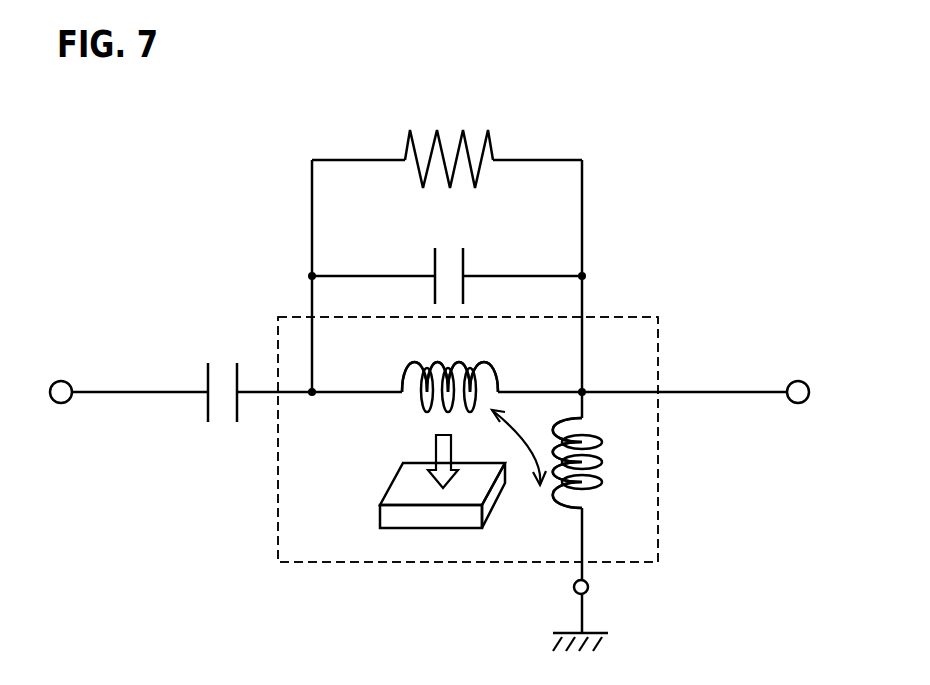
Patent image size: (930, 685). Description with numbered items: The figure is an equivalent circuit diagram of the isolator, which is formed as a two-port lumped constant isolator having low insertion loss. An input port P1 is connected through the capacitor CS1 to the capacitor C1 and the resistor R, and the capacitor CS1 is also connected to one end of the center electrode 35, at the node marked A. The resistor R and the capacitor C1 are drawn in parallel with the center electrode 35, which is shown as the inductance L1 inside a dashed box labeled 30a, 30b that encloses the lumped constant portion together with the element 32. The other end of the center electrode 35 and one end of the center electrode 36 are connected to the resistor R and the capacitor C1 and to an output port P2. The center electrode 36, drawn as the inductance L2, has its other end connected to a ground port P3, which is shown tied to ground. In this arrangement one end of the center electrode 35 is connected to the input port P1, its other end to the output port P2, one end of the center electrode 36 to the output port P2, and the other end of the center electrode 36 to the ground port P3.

The module 30a is at (632, 317).
The module 30b is at (632, 317).
The element (chip) 32 is at (423, 532).
The center electrode 35 is at (427, 412).
The center electrode 36 is at (557, 503).
The resistor R is at (449, 139).
The capacitor C1 is at (450, 255).
The capacitor CS1 is at (222, 373).
The inductor L1 is at (450, 366).
The inductor L2 is at (600, 463).
The input port P1 is at (62, 372).
The output port P2 is at (798, 371).
The ground port P3 is at (559, 590).
The node A is at (313, 427).